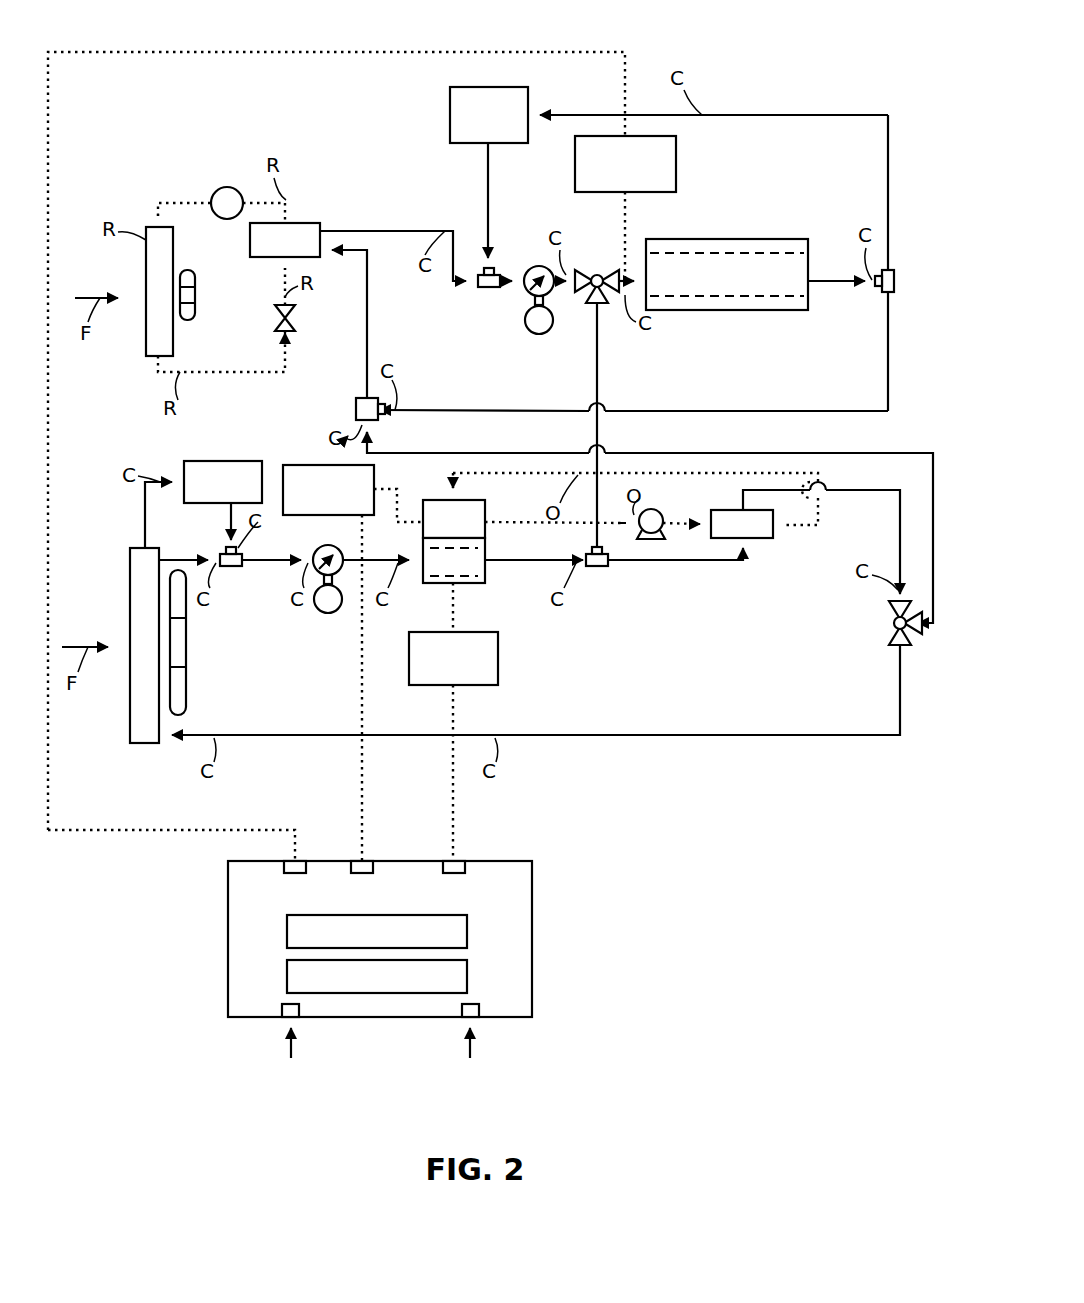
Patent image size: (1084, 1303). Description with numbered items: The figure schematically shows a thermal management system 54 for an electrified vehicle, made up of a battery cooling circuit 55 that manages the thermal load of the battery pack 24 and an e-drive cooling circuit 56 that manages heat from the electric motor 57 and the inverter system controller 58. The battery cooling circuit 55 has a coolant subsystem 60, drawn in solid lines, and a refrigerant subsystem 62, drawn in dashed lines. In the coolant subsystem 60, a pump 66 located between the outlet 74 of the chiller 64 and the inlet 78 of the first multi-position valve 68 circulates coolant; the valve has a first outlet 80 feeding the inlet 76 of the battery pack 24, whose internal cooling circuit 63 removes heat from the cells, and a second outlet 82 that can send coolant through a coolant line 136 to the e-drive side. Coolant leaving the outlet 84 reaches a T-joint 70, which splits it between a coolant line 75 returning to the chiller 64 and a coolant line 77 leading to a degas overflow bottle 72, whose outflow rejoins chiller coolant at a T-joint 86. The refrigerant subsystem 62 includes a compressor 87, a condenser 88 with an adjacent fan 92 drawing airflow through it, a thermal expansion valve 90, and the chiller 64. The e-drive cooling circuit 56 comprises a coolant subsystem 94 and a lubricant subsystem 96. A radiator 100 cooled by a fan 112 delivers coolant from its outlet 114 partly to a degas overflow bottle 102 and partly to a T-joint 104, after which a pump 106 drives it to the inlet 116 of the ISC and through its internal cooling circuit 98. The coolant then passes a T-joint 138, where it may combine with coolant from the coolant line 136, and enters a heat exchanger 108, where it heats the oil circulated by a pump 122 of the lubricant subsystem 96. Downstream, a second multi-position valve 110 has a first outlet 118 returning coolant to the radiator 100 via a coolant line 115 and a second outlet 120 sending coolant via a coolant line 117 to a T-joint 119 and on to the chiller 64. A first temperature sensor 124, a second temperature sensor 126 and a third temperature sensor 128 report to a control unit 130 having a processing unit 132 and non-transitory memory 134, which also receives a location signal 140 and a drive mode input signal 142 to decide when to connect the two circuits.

The battery pack 24 is at (752, 239).
The thermal management system 54 is at (584, 40).
The battery cooling circuit 55 is at (832, 103).
The e-drive cooling circuit 56 is at (568, 742).
The electric motor 57 is at (485, 512).
The inverter system controller 58 is at (434, 583).
The coolant subsystem 60 is at (400, 231).
The refrigerant subsystem 62 is at (190, 198).
The internal cooling circuit 63 is at (755, 296).
The chiller 64 is at (292, 223).
The pump 66 is at (545, 268).
The first multi-position valve 68 is at (590, 270).
The T-joint 70 is at (894, 277).
The degas overflow bottle 72 is at (500, 87).
The outlet of the chiller 74 is at (322, 232).
The coolant line 75 is at (888, 356).
The inlet of the battery pack 76 is at (632, 293).
The coolant line 77 is at (888, 210).
The inlet of the multi-position valve 78 is at (553, 323).
The first outlet 80 is at (612, 271).
The second outlet 82 is at (595, 303).
The outlet of the battery pack 84 is at (815, 268).
The T-joint 86 is at (487, 290).
The compressor 87 is at (230, 187).
The condenser 88 is at (156, 358).
The thermal expansion valve 90 is at (290, 318).
The fan 92 is at (195, 290).
The coolant subsystem 94 is at (368, 553).
The lubricant subsystem 96 is at (440, 482).
The internal cooling circuit 98 is at (470, 583).
The radiator 100 is at (145, 744).
The degas overflow bottle 102 is at (210, 461).
The T-joint 104 is at (233, 568).
The pump 106 is at (322, 550).
The heat exchanger 108 is at (758, 540).
The second multi-position valve 110 is at (888, 620).
The fan 112 is at (186, 693).
The outlet of the radiator 114 is at (162, 553).
The coolant line 115 is at (704, 738).
The inlet of the ISC 116 is at (412, 580).
The coolant line 117 is at (895, 453).
The first outlet 118 is at (896, 648).
The T-joint 119 is at (356, 410).
The second outlet 120 is at (920, 630).
The pump 122 is at (645, 510).
The first temperature sensor 124 is at (676, 160).
The second temperature sensor 126 is at (312, 465).
The third temperature sensor 128 is at (447, 686).
The control unit 130 is at (228, 948).
The processing unit 132 is at (470, 930).
The non-transitory memory 134 is at (470, 976).
The coolant line 136 is at (597, 388).
The T-joint 138 is at (597, 568).
The location signal 140 is at (291, 1048).
The drive mode input signal 142 is at (470, 1048).